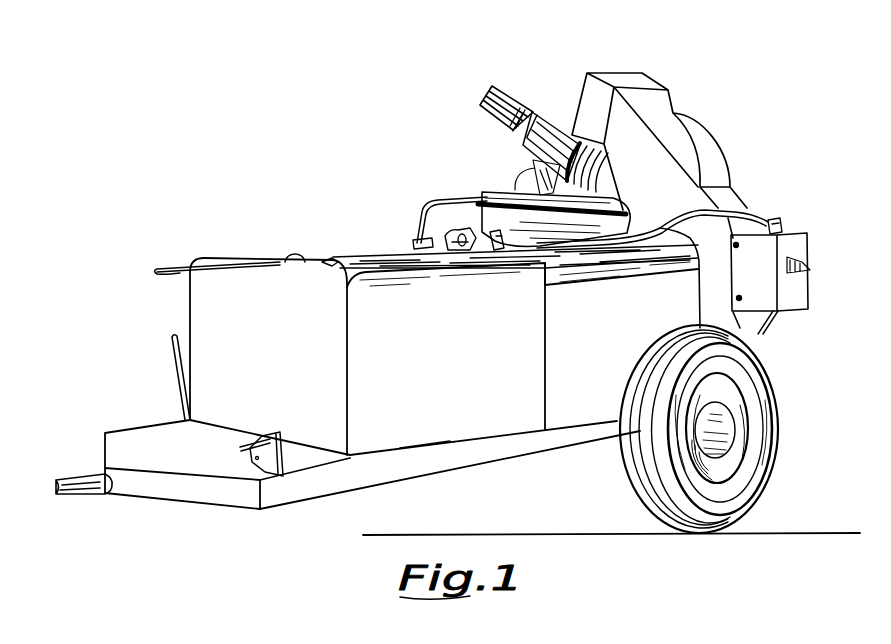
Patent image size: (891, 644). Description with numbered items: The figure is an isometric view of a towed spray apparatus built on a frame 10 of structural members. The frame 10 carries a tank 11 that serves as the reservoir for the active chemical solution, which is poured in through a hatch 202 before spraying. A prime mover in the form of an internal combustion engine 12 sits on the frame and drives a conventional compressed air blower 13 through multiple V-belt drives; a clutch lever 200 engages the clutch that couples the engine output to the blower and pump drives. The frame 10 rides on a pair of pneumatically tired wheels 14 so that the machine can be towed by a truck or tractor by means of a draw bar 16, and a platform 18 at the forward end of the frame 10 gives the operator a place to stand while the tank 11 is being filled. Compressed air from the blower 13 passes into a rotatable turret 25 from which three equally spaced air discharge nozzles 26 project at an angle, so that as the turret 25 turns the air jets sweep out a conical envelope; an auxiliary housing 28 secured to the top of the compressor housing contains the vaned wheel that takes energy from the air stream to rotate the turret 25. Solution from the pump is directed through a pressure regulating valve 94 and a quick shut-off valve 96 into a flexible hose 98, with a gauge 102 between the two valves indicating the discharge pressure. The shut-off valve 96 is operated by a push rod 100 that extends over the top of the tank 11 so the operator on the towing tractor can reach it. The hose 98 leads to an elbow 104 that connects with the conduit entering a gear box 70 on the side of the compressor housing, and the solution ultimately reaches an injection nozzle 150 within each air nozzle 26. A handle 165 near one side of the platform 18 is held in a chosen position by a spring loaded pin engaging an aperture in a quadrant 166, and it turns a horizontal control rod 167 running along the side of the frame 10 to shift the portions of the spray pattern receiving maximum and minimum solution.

The frame 10 is at (350, 486).
The tank 11 is at (444, 350).
The internal combustion engine 12 is at (438, 217).
The compressed air blower 13 is at (578, 218).
The pneumatically tired wheels 14 is at (775, 413).
The draw bar 16 is at (85, 498).
The platform 18 is at (140, 437).
The turret 25 is at (548, 95).
The air discharge nozzles 26 is at (513, 82).
The auxiliary housing 28 is at (707, 148).
The gear box 70 is at (808, 301).
The pressure regulating valve 94 is at (428, 238).
The quick shut-off valve 96 is at (522, 235).
The flexible hose 98 is at (748, 212).
The push rod 100 is at (213, 265).
The gauge 102 is at (465, 237).
The elbow 104 is at (784, 226).
The injection nozzle 150 is at (484, 100).
The handle 165 is at (245, 450).
The quadrant 166 is at (284, 444).
The horizontal control rod 167 is at (424, 446).
The clutch lever 200 is at (170, 338).
The hatch 202 is at (312, 256).